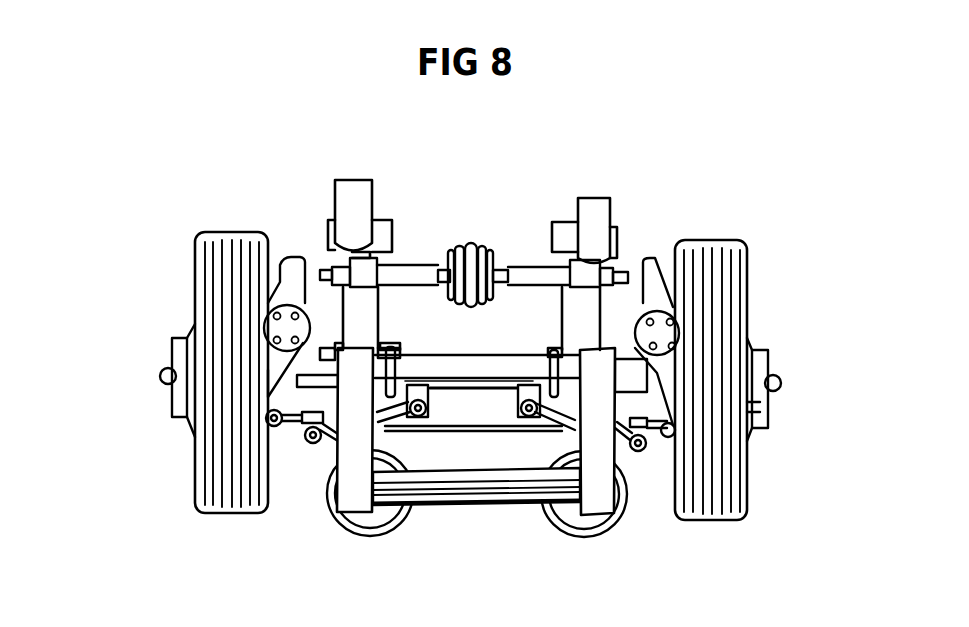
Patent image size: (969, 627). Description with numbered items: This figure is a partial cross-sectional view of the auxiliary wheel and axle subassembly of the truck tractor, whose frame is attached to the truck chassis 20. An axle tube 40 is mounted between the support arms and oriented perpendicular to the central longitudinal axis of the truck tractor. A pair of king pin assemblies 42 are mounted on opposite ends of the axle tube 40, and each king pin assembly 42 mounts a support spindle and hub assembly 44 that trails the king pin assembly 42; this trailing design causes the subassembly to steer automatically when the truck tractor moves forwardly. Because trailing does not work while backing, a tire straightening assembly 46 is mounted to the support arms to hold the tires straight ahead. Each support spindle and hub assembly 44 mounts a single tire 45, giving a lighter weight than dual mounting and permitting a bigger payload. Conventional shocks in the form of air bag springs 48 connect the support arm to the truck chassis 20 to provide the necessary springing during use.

The chassis 20 is at (603, 502).
The axle tube 40 is at (480, 370).
The king pin assembly 42 is at (270, 298).
The support spindle and hub assembly 44 is at (160, 372).
The tire 45 is at (212, 263).
The tire straightening assembly 46 is at (516, 264).
The air bag springs 48 is at (382, 508).